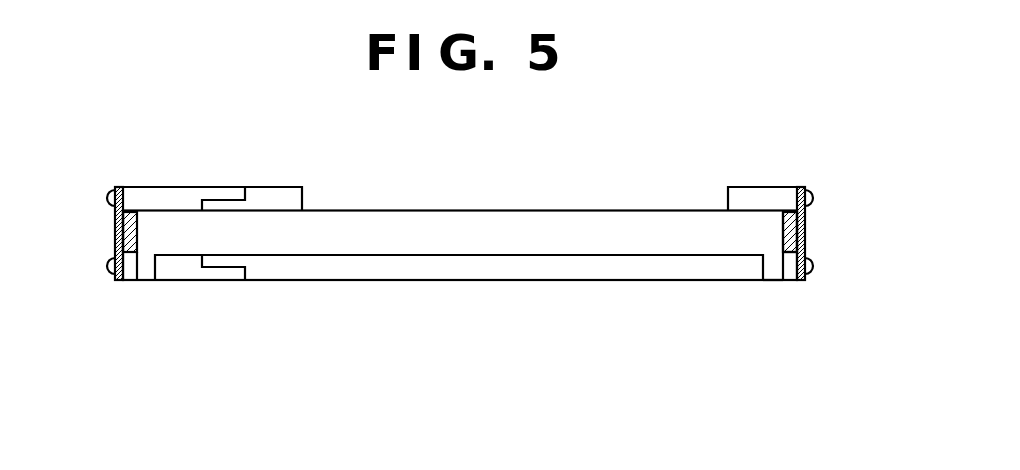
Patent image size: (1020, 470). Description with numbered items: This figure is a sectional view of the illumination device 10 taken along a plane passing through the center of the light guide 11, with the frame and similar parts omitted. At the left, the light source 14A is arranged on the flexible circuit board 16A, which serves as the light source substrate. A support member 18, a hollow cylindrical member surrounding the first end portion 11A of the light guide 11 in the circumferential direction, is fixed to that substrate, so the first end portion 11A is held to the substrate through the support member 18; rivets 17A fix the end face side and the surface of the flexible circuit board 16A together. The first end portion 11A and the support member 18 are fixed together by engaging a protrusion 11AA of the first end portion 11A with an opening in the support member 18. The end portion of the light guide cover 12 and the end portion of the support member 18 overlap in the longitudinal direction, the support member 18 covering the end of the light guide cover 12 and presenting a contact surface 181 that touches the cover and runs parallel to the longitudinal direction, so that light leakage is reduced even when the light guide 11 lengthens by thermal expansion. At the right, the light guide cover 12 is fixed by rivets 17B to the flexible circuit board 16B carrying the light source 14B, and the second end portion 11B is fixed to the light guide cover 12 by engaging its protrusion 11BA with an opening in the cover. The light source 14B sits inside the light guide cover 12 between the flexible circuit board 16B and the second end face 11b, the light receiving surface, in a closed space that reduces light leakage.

The illumination device 10 is at (411, 149).
The light guide 11 is at (458, 217).
The first end portion 11A is at (128, 371).
The second end portion 11B is at (773, 371).
The protrusion 11AA is at (145, 270).
The protrusion 11BA is at (777, 270).
The second end face 11b is at (783, 227).
The light guide cover 12 is at (285, 189).
The light source 14A is at (116, 236).
The light source 14B is at (805, 232).
The flexible circuit board 16A is at (118, 185).
The flexible circuit board 16B is at (799, 185).
The rivets 17A is at (107, 199).
The rivets 17B is at (813, 198).
The support member 18 is at (173, 192).
The contact surface 181 is at (217, 198).